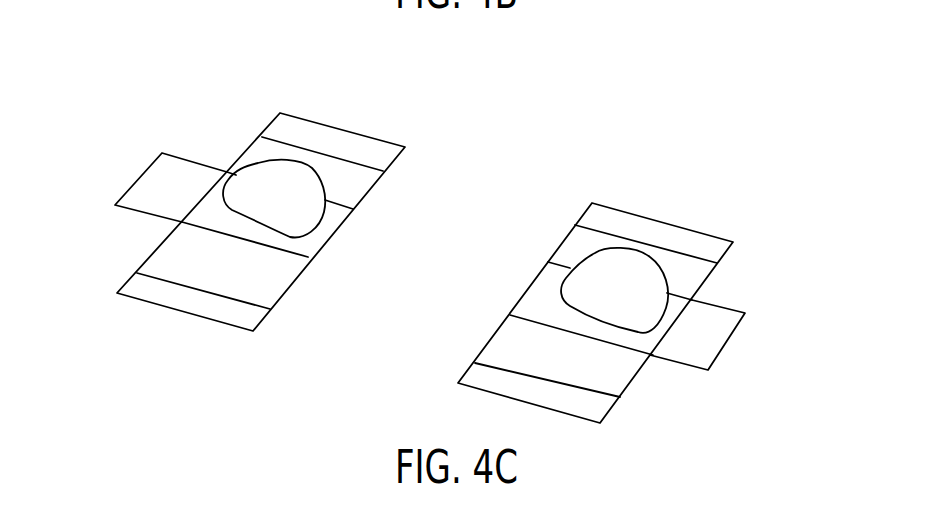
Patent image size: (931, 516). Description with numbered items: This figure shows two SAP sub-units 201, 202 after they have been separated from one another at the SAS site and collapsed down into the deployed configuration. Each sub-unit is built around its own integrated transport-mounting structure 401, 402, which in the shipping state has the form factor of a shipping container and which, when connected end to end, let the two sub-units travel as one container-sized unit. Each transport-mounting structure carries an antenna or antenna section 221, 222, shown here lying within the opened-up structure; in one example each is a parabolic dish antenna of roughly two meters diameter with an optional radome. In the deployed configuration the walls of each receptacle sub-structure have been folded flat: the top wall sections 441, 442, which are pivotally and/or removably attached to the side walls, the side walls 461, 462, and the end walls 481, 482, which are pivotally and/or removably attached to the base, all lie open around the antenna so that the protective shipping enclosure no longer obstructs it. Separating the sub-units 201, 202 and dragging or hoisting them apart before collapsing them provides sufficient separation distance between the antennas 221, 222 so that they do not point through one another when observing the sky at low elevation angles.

The SAP sub-unit 201 is at (292, 60).
The transport-mounting structure 401 is at (280, 113).
The antenna 221 is at (304, 142).
The top wall section 441 is at (103, 274).
The side wall 461 is at (360, 188).
The end wall 481 is at (193, 168).
The SAP sub-unit 202 is at (710, 130).
The transport-mounting structure 402 is at (733, 242).
The antenna 222 is at (634, 228).
The top wall section 442 is at (680, 235).
The side wall 462 is at (630, 370).
The end wall 482 is at (718, 315).